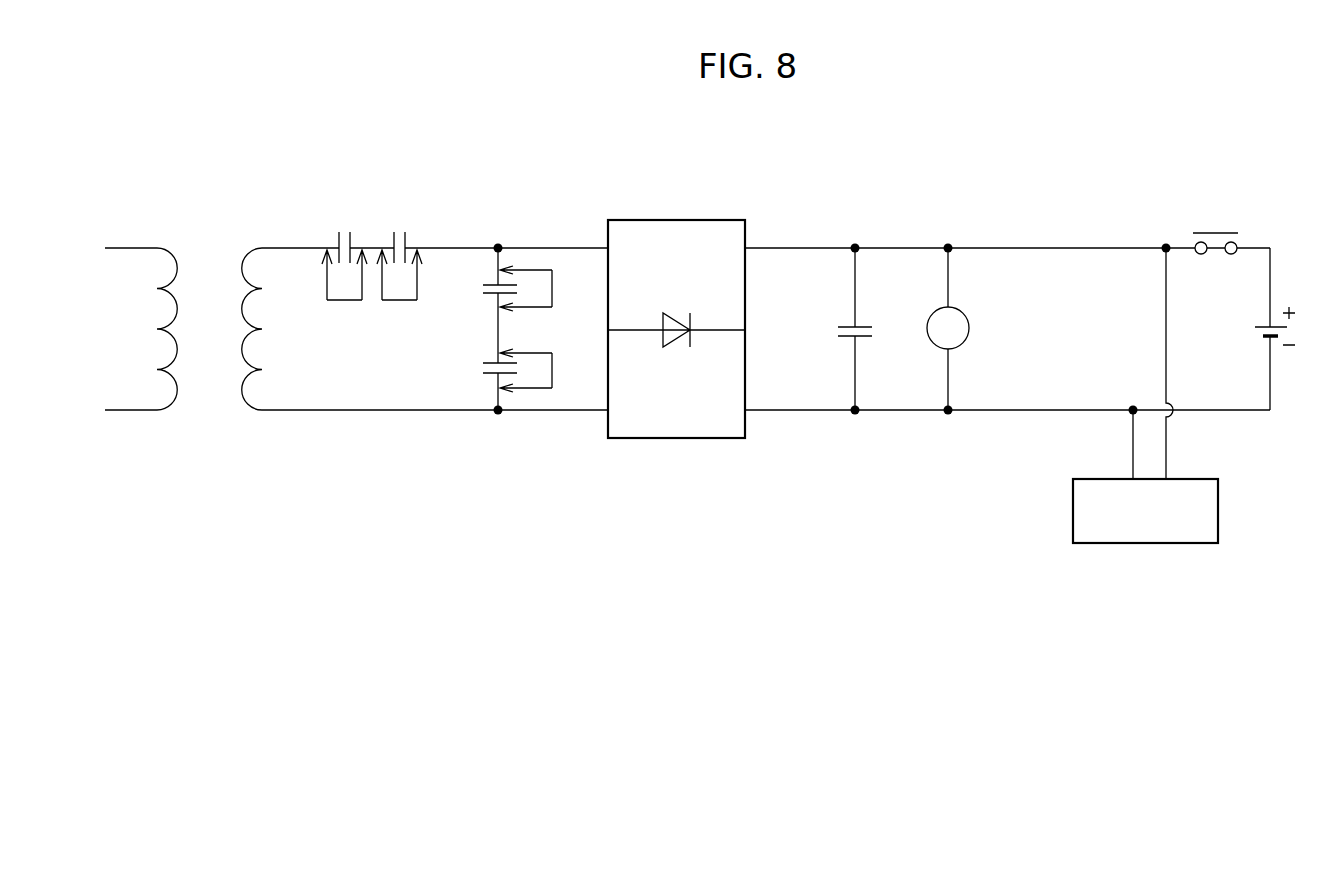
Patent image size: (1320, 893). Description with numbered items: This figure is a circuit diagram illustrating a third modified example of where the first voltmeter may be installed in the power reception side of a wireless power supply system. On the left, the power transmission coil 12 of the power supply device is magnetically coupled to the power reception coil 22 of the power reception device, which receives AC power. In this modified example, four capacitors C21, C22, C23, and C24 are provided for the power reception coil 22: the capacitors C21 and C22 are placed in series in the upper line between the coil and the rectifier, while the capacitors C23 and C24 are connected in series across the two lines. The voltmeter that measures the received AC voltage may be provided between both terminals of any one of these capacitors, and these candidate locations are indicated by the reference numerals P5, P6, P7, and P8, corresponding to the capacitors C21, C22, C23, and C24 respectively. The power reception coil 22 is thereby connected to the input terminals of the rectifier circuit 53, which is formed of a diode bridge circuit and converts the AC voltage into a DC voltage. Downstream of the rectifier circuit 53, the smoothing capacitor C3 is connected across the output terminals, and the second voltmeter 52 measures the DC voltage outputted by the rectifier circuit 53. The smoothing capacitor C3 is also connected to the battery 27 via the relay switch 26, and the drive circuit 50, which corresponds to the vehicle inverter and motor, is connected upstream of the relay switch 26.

The power transmission coil 12 is at (178, 256).
The power reception coil 22 is at (237, 352).
The capacitor C21 is at (338, 236).
The capacitor C22 is at (407, 236).
The capacitor C23 is at (483, 294).
The capacitor C24 is at (483, 366).
The capacitor terminal pair P5 is at (344, 291).
The capacitor terminal pair P6 is at (399, 291).
The capacitor terminal pair P7 is at (543, 288).
The capacitor terminal pair P8 is at (543, 370).
The rectifier circuit 53 is at (697, 220).
The smoothing capacitor C3 is at (847, 327).
The second voltmeter 52 is at (928, 338).
The relay switch 26 is at (1210, 232).
The battery 27 is at (1256, 326).
The drive circuit 50 is at (1219, 510).